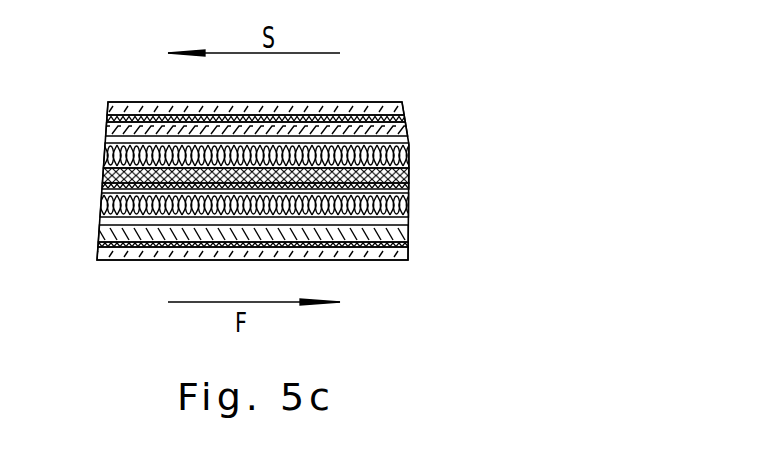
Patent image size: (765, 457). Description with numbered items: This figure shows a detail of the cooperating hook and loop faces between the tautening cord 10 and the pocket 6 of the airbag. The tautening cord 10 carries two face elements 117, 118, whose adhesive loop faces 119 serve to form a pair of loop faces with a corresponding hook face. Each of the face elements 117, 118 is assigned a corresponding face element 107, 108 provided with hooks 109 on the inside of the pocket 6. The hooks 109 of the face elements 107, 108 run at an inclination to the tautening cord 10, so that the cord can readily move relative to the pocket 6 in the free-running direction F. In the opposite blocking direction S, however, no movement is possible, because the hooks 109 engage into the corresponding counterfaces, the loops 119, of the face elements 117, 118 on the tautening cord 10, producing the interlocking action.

The pocket 6 is at (102, 103).
The tautening cord 10 is at (103, 180).
The face element 107 is at (384, 106).
The face element 108 is at (377, 250).
The hooks 109 is at (410, 127).
The face element 117 is at (408, 172).
The face element 118 is at (405, 186).
The adhesive loop faces 119 is at (408, 152).